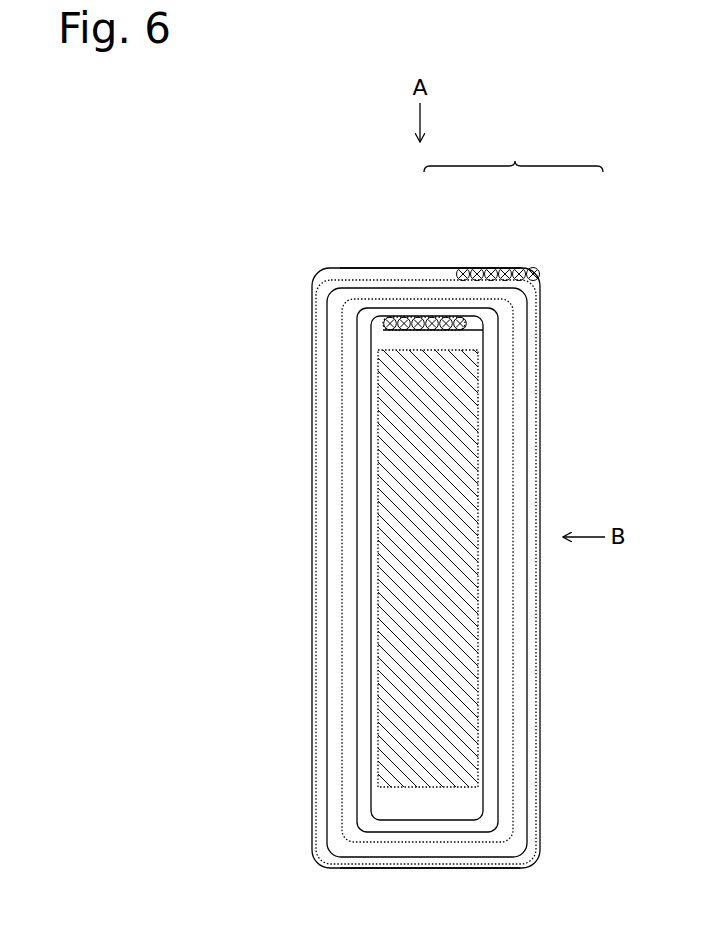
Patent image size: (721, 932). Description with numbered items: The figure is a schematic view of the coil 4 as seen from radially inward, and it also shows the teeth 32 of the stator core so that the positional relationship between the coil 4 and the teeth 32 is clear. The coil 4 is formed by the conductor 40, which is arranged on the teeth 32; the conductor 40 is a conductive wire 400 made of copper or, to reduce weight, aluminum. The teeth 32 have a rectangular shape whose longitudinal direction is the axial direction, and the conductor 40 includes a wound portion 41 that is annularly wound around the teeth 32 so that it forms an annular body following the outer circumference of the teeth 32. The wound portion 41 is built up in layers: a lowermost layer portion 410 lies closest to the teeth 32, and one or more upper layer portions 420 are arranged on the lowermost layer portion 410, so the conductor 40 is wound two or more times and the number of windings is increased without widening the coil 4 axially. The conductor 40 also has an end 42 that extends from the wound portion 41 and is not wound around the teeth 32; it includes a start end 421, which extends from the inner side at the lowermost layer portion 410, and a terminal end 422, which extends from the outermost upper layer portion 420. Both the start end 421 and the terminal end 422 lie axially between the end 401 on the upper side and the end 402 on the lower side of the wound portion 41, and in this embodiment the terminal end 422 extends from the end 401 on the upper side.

The coil 4 is at (260, 226).
The conductor 40 is at (513, 153).
The conductive wire 400 is at (477, 267).
The end on the upper side 401 is at (352, 266).
The end on the lower side 402 is at (352, 870).
The wound portion 41 is at (311, 497).
The lowermost layer portion 410 is at (478, 327).
The end 42 is at (427, 572).
The upper layer portion 420 is at (336, 273).
The start end 421 is at (382, 334).
The terminal end 422 is at (440, 262).
The teeth 32 is at (405, 575).